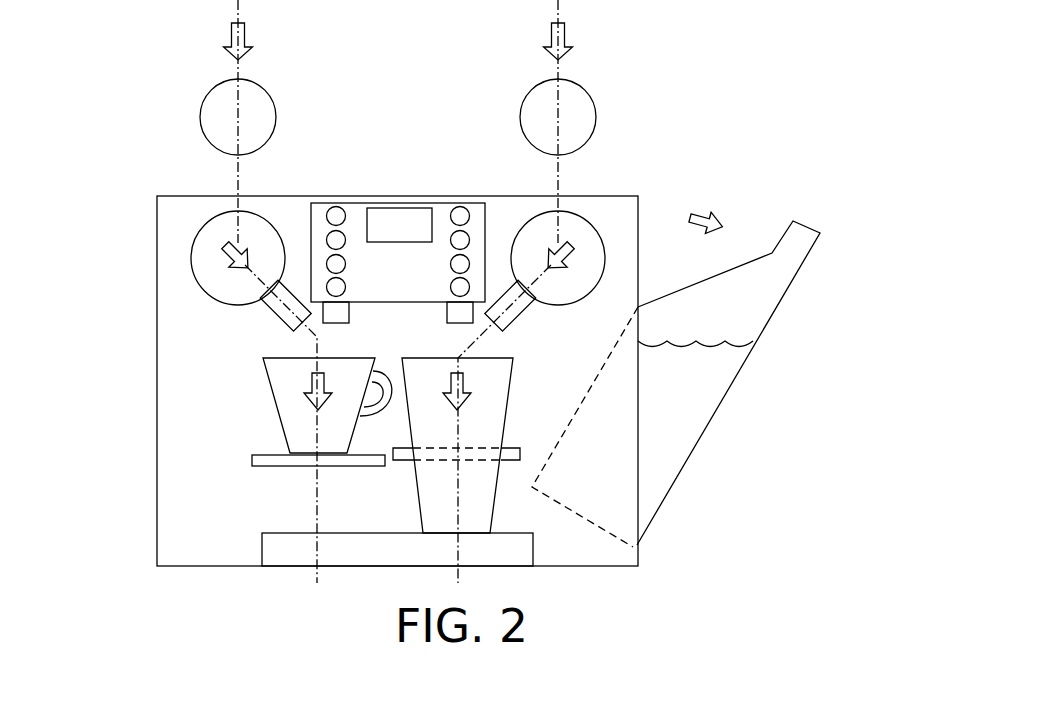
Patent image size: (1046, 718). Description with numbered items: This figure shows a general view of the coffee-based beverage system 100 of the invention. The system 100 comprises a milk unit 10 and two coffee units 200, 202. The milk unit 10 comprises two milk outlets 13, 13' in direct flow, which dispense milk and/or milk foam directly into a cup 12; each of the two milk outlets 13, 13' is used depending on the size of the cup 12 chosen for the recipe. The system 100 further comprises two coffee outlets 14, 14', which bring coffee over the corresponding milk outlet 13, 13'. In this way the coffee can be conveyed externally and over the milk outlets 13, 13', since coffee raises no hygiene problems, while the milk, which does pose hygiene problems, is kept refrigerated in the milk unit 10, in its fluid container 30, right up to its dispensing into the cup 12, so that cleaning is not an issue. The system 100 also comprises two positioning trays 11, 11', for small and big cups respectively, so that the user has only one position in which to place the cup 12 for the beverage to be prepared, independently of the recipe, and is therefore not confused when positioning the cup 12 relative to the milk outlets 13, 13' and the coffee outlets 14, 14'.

The system 100 is at (739, 141).
The milk unit 10 is at (157, 262).
The coffee unit 200 is at (200, 117).
The coffee unit 202 is at (596, 116).
The coffee outlet 14 is at (251, 282).
The coffee outlet 14' is at (545, 279).
The milk outlet 13 is at (364, 327).
The milk outlet 13' is at (433, 315).
The cup 12 is at (268, 390).
The positioning tray 11 is at (449, 480).
The positioning tray 11' is at (366, 549).
The fluid container 30 is at (772, 317).